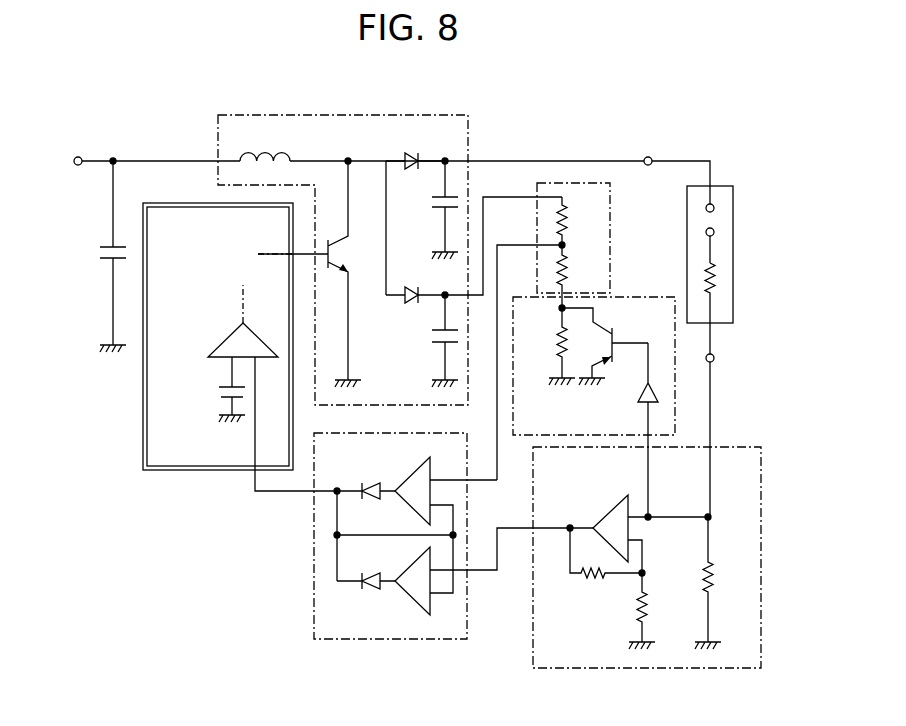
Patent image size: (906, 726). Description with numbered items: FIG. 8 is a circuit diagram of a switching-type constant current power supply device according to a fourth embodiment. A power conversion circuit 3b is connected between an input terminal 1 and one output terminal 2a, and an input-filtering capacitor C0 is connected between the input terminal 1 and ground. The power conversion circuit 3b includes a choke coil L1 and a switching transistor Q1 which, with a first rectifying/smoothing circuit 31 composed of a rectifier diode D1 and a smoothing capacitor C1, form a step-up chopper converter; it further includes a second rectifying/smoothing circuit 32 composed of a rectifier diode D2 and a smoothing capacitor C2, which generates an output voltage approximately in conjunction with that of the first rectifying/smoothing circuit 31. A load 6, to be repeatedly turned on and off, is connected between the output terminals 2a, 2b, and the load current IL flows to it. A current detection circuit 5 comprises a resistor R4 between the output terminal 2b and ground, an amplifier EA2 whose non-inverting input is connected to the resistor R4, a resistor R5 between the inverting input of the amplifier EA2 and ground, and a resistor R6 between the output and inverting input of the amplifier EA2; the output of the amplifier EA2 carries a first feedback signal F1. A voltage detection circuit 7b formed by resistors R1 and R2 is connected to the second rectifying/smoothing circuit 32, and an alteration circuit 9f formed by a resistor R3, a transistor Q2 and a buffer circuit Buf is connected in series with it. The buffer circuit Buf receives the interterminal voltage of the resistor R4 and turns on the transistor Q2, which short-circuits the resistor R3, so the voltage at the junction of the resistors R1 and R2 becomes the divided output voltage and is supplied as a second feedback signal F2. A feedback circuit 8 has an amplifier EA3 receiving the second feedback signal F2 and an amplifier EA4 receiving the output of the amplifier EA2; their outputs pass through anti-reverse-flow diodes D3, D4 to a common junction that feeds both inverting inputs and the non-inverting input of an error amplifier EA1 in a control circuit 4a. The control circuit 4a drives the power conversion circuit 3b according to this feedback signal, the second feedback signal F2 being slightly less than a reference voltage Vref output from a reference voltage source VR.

The input terminal 1 is at (78, 157).
The output terminal 2a is at (648, 157).
The output terminal 2b is at (716, 356).
The power conversion circuit 3b is at (212, 137).
The control circuit 4a is at (190, 471).
The current detection circuit 5 is at (737, 438).
The load 6 is at (735, 205).
The voltage detection circuit 7b is at (618, 204).
The feedback circuit 8 is at (309, 590).
The alteration circuit 9f is at (633, 290).
The first rectifying/smoothing circuit 31 is at (418, 198).
The second rectifying/smoothing circuit 32 is at (413, 333).
The choke coil L1 is at (272, 134).
The rectifier diode D1 is at (415, 155).
The rectifier diode D2 is at (417, 288).
The anti-reverse-flow diode D3 is at (372, 498).
The diode D4 is at (372, 575).
The input-filtering capacitor C0 is at (100, 254).
The smoothing capacitor C1 is at (432, 202).
The smoothing capacitor C2 is at (432, 336).
The switching transistor Q1 is at (346, 247).
The transistor Q2 is at (614, 320).
The error amplifier EA1 is at (220, 347).
The amplifier EA2 is at (617, 503).
The amplifier EA3 is at (410, 475).
The amplifier EA4 is at (415, 603).
The reference voltage source VR is at (225, 393).
The reference voltage Vref is at (197, 397).
The load current IL is at (702, 153).
The feedback signal F1 is at (546, 520).
The second feedback signal F2 is at (505, 237).
The resistor R1 is at (568, 222).
The resistor R2 is at (568, 272).
The resistor R3 is at (557, 343).
The resistor R4 is at (715, 573).
The resistor R5 is at (633, 607).
The resistor R6 is at (605, 580).
The buffer circuit Buf is at (638, 397).